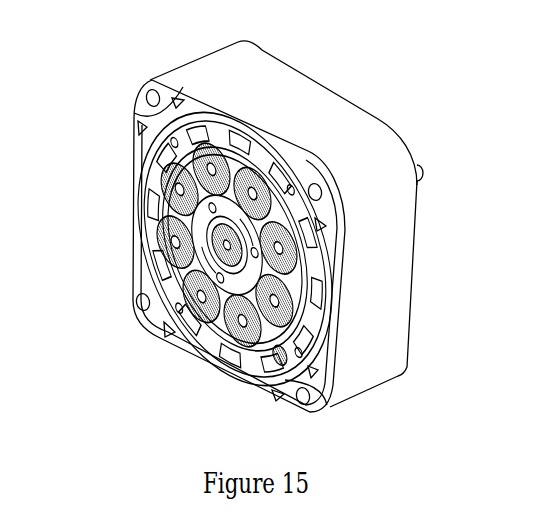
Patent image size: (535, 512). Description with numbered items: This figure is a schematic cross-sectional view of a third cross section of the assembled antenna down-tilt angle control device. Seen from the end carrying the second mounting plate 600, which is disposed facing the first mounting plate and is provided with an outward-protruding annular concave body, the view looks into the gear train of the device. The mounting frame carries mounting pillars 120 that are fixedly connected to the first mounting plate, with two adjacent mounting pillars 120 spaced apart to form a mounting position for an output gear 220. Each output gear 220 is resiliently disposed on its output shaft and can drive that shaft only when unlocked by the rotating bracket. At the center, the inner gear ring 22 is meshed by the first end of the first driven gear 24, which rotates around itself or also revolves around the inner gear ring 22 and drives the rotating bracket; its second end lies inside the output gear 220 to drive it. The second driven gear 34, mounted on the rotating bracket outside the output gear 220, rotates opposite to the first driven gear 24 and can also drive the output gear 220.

The second mounting plate 600 is at (340, 113).
The mounting pillar 120 is at (165, 158).
The output gear 220 is at (197, 150).
The first driven gear 24 is at (178, 196).
The inner gear ring 22 is at (158, 284).
The second driven gear 34 is at (285, 340).